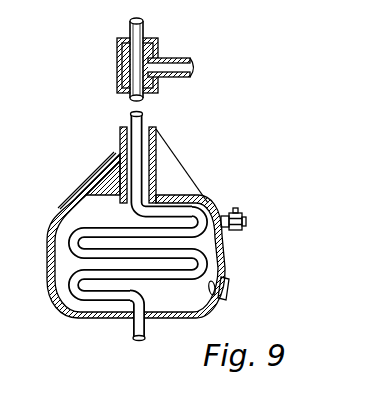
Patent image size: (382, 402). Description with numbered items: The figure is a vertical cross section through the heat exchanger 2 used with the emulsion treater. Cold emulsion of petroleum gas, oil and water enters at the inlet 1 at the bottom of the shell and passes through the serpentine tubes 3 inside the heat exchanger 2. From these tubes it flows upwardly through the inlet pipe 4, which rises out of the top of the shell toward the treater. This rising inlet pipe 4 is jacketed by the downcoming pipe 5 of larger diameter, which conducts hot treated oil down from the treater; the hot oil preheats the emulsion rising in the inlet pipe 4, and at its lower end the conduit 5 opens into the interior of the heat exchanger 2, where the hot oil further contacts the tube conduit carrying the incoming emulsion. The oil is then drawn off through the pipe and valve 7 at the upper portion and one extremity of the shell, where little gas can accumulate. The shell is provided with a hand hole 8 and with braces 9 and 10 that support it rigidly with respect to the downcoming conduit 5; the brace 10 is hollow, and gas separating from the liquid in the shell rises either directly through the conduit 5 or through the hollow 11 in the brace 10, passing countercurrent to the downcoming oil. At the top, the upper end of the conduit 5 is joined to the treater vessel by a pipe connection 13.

The inlet for cold emulsion 1 is at (147, 333).
The heat exchanger 2 is at (47, 253).
The tubes 3 is at (110, 277).
The inlet pipe 4 is at (141, 143).
The downcoming pipe 5 is at (122, 140).
The pipe and valve 7 is at (243, 216).
The hand holes 8 is at (228, 290).
The brace 9 is at (172, 182).
The brace 10 is at (92, 178).
The hollow 11 is at (105, 165).
The pipe connection 13 is at (175, 58).